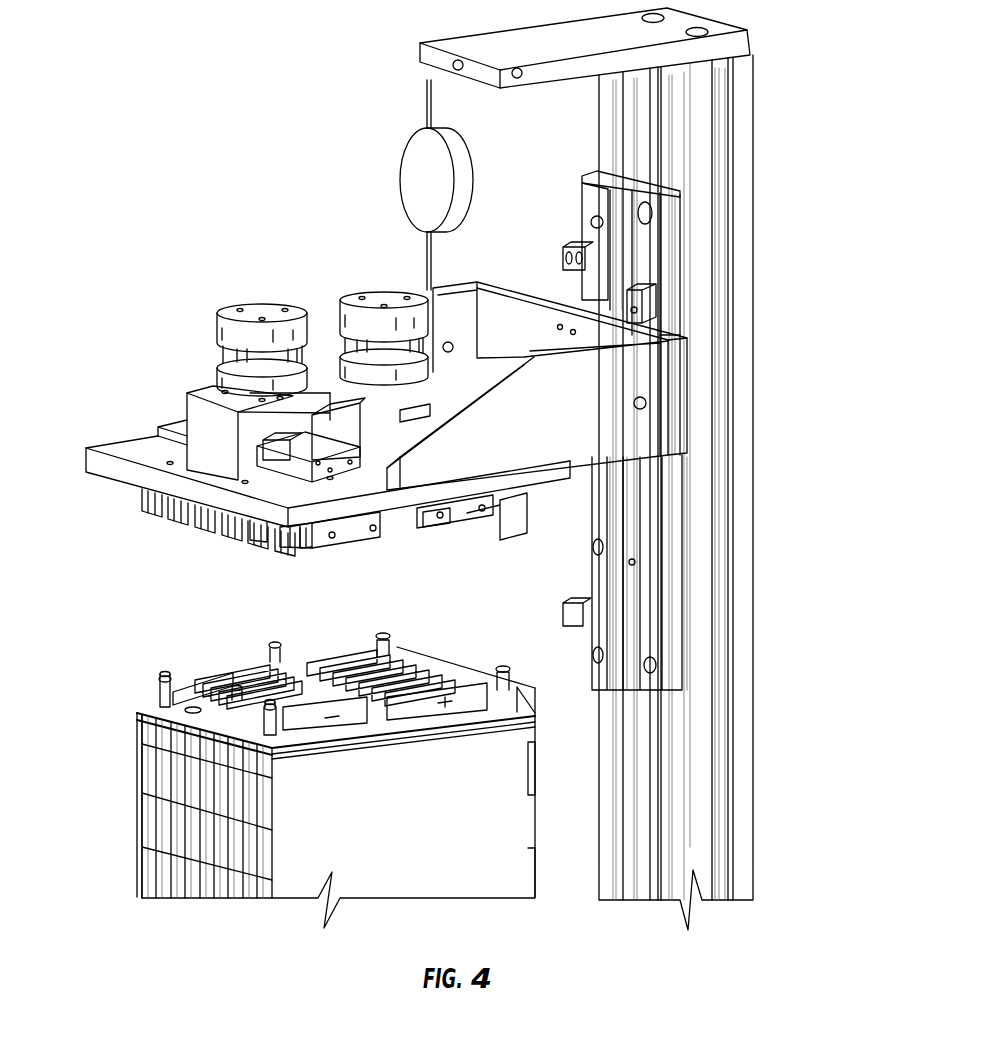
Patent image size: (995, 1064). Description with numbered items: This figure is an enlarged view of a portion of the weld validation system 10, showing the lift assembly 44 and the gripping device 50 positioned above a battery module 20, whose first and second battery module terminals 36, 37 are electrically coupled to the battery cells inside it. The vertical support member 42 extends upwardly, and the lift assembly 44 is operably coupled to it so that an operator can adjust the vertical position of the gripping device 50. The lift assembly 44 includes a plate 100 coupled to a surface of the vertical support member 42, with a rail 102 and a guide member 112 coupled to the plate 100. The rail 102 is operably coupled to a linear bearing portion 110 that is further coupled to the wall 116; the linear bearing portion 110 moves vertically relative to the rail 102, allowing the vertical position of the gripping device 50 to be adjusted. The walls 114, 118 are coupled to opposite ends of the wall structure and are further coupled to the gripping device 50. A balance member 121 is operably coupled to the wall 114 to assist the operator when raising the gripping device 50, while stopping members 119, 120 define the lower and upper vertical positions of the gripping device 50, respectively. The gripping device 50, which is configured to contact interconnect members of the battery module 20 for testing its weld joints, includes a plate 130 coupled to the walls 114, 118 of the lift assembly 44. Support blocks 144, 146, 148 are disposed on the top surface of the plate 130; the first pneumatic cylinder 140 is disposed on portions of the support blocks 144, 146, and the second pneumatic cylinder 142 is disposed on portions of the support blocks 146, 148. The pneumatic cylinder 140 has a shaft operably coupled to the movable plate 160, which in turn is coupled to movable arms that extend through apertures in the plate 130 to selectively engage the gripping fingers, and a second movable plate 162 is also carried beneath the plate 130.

The weld validation system 10 is at (818, 90).
The battery module 20 is at (423, 647).
The first battery module terminal 36 is at (160, 682).
The second battery module terminal 37 is at (282, 722).
The vertical support member 42 is at (752, 230).
The lift assembly 44 is at (676, 305).
The gripping device 50 is at (215, 216).
The plate 100 is at (672, 255).
The rail 102 is at (590, 197).
The linear bearing portion 110 is at (600, 303).
The guide member 112 is at (654, 605).
The support wall 114 is at (437, 292).
The support wall 116 is at (494, 283).
The support wall 118 is at (572, 458).
The stopping member 119 is at (575, 615).
The stopping member 120 is at (568, 240).
The balance member 121 is at (413, 165).
The plate 130 is at (100, 447).
The first pneumatic cylinder 140 is at (258, 303).
The second pneumatic cylinder 142 is at (376, 290).
The support block 144 is at (200, 420).
The support block 146 is at (354, 452).
The support block 148 is at (450, 402).
The movable plate 160 is at (345, 488).
The movable plate 162 is at (400, 468).